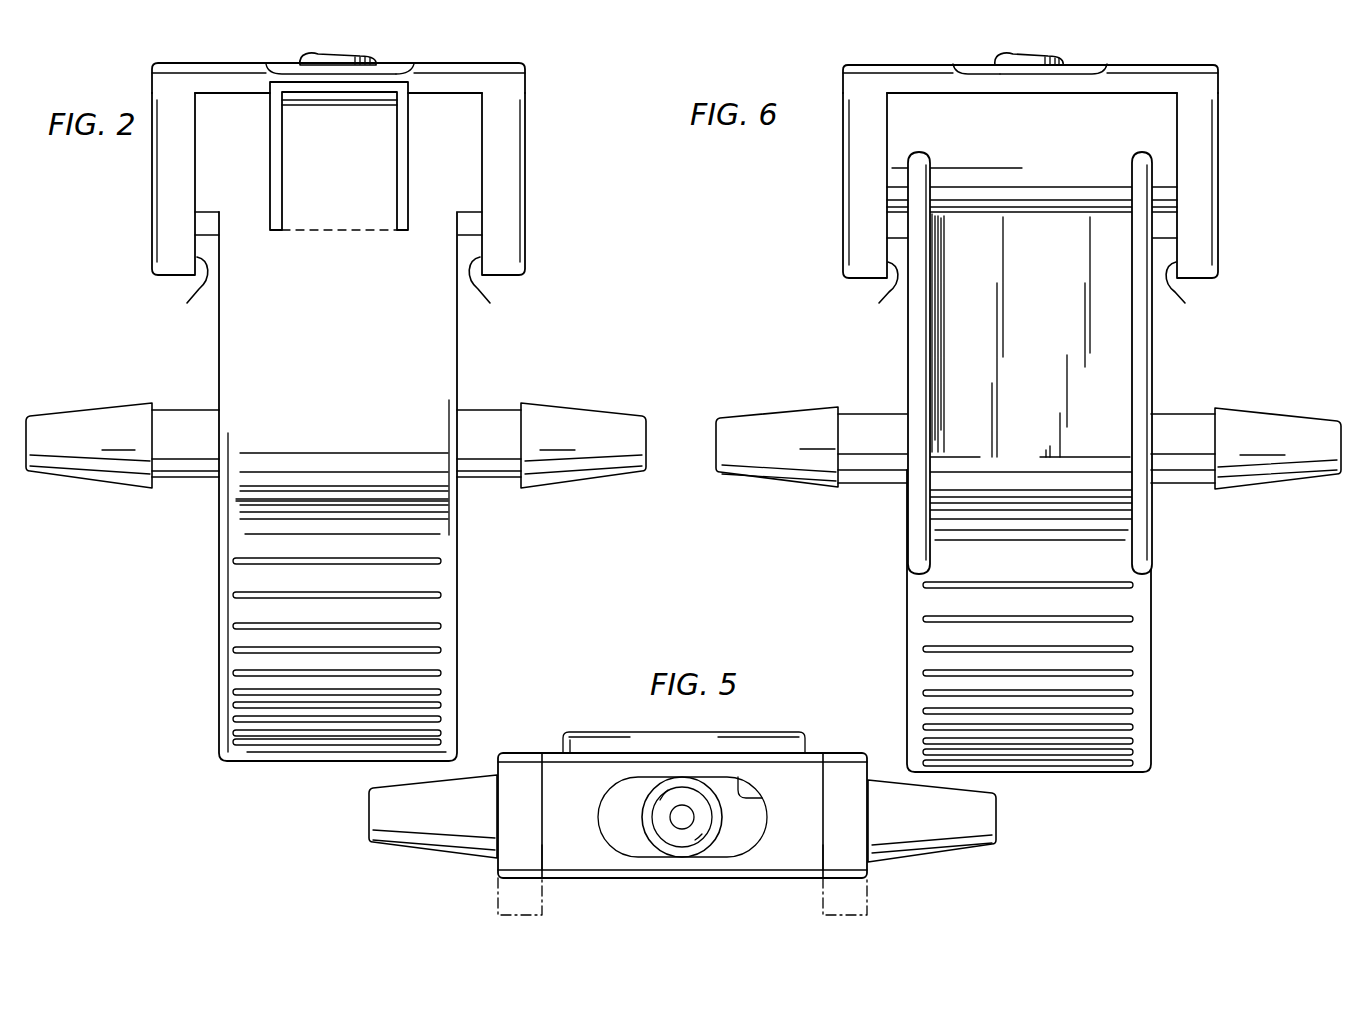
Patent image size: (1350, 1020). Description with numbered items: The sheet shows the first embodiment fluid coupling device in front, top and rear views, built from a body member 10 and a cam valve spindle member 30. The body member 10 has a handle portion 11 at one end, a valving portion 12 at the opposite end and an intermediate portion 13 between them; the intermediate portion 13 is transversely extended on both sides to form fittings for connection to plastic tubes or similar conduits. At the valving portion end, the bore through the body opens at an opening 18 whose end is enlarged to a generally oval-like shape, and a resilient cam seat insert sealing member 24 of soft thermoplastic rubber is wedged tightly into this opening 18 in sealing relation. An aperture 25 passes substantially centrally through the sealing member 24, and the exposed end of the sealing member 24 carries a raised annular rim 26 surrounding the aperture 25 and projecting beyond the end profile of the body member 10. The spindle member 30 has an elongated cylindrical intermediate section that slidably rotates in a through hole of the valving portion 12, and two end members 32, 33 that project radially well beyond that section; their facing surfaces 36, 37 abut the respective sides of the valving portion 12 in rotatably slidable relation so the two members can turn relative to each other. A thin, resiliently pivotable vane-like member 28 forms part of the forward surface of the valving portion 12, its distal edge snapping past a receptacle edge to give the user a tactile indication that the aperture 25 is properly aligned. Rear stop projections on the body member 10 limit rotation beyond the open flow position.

In FIG. 2, the body member 10 is at (594, 356).
In FIG. 6, the body member 10 is at (1284, 368).
In FIG. 5, the body member 10 is at (844, 716).
In FIG. 2, the handle portion 11 is at (437, 634).
In FIG. 6, the handle portion 11 is at (1140, 724).
In FIG. 2, the valving portion 12 is at (455, 103).
In FIG. 2, the intermediate portion 13 is at (436, 383).
In FIG. 6, the intermediate portion 13 is at (944, 351).
In FIG. 2, the opening 18 is at (397, 72).
In FIG. 6, the opening 18 is at (965, 67).
In FIG. 5, the opening 18 is at (746, 797).
In FIG. 2, the cam seat insert sealing member 24 is at (278, 63).
In FIG. 6, the cam seat insert sealing member 24 is at (1092, 65).
In FIG. 5, the cam seat insert sealing member 24 is at (617, 797).
In FIG. 5, the aperture 25 is at (678, 804).
In FIG. 2, the raised annular rim 26 is at (302, 55).
In FIG. 6, the raised annular rim 26 is at (1002, 57).
In FIG. 5, the raised annular rim 26 is at (672, 848).
In FIG. 2, the vane-like member 28 is at (373, 105).
In FIG. 2, the cam valve spindle member 30 is at (574, 241).
In FIG. 6, the cam valve spindle member 30 is at (1272, 130).
In FIG. 5, the cam valve spindle member 30 is at (559, 697).
In FIG. 2, the end member 32 is at (512, 142).
In FIG. 6, the end member 32 is at (848, 181).
In FIG. 2, the end member 33 is at (163, 203).
In FIG. 6, the end member 33 is at (1196, 227).
In FIG. 5, the end member 33 is at (523, 767).
In FIG. 2, the facing surface 36 is at (490, 303).
In FIG. 6, the facing surface 36 is at (884, 300).
In FIG. 5, the facing surface 36 is at (820, 867).
In FIG. 2, the facing surface 37 is at (187, 303).
In FIG. 6, the facing surface 37 is at (1185, 303).
In FIG. 5, the facing surface 37 is at (544, 850).